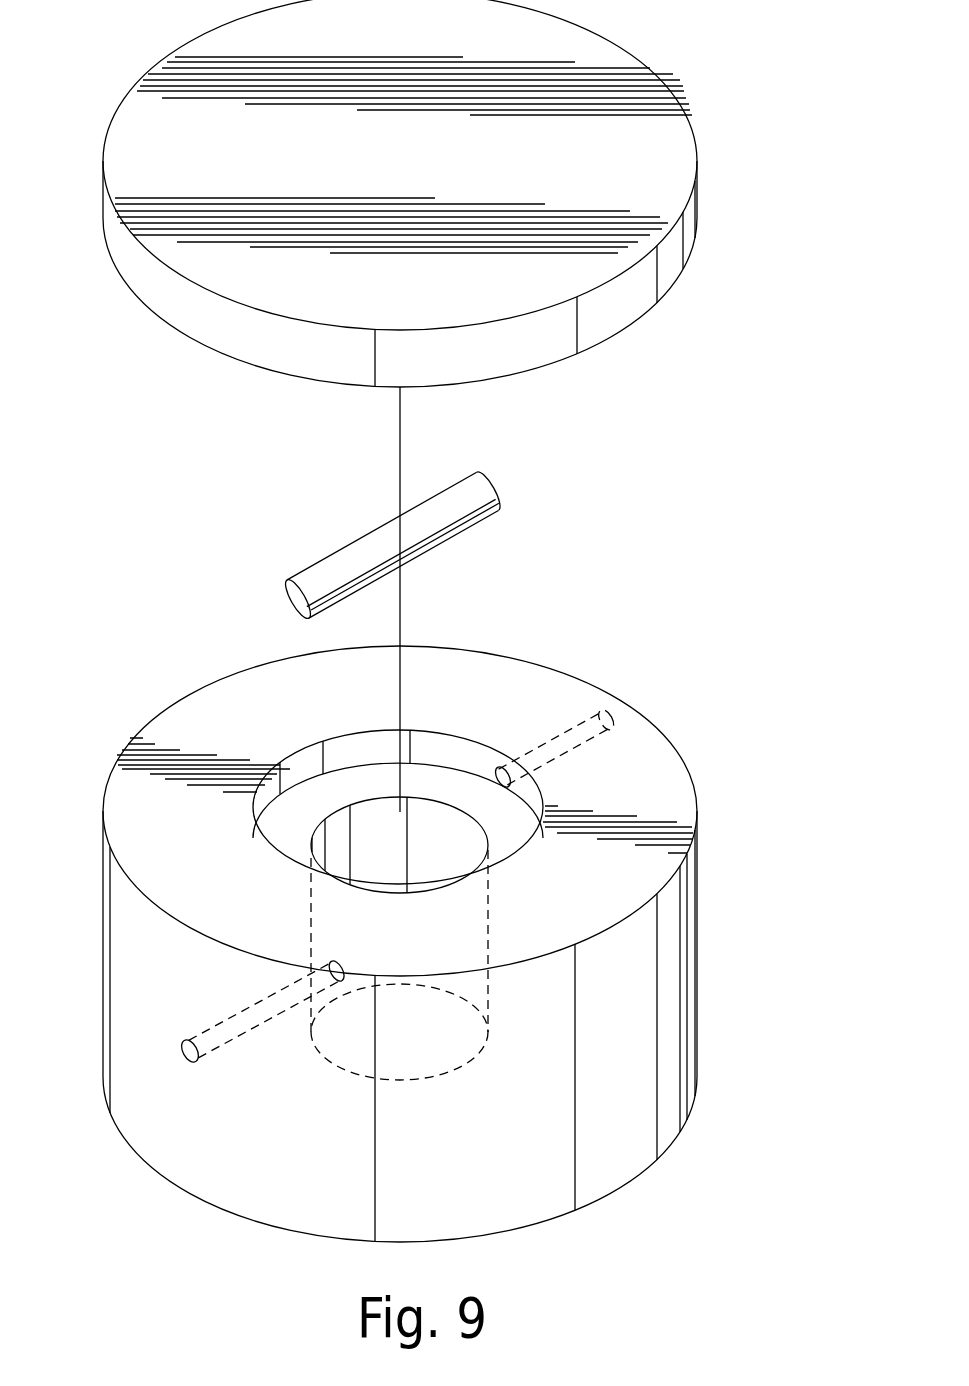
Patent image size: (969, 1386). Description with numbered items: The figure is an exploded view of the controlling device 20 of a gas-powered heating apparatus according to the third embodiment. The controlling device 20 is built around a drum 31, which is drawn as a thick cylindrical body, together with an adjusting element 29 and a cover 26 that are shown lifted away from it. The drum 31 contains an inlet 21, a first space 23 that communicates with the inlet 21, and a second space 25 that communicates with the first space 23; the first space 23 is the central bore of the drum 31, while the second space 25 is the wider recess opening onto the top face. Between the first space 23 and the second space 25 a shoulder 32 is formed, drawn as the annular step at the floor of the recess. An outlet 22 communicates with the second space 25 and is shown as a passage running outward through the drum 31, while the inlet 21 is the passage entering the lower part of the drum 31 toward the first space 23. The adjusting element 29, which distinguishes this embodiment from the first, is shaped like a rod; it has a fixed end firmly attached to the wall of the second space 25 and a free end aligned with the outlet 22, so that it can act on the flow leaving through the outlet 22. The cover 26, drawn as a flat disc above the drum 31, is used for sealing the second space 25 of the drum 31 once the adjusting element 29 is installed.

The controlling device 20 is at (682, 1147).
The inlet 21 is at (197, 1034).
The outlet 22 is at (617, 722).
The first space 23 is at (453, 842).
The second space 25 is at (292, 773).
The cover 26 is at (640, 97).
The adjusting element 29 is at (478, 492).
The drum 31 is at (648, 990).
The shoulder 32 is at (488, 805).